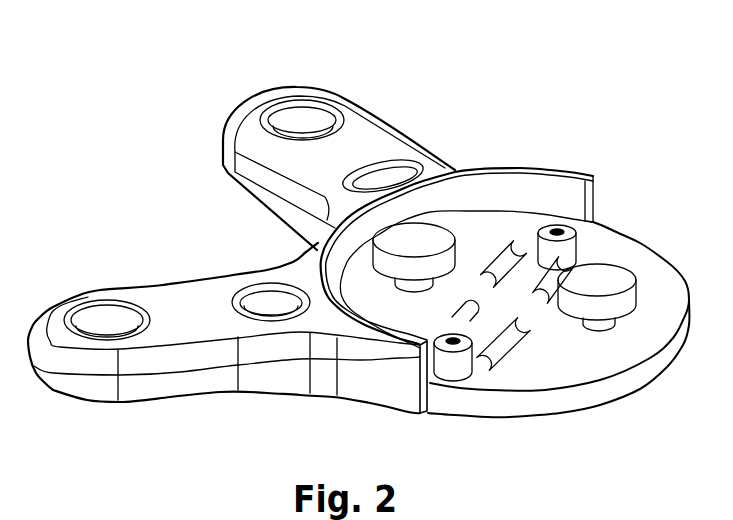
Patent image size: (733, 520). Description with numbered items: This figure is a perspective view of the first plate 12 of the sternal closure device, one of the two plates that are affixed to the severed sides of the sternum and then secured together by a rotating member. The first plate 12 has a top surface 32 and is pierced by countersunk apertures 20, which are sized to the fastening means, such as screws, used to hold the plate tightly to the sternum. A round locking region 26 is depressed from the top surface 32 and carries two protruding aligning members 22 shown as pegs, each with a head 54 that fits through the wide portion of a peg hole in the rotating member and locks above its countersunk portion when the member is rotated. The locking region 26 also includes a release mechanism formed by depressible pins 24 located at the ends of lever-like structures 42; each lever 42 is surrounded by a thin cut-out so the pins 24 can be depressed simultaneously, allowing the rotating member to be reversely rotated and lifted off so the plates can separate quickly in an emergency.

The first plate 12 is at (322, 134).
The countersunk apertures 20 is at (300, 130).
The protruding aligning members 22 is at (534, 256).
The depressible pins 24 is at (572, 232).
The locking region 26 is at (552, 365).
The top surface 32 is at (180, 300).
The lever-like structures 42 is at (477, 327).
The head 54 is at (609, 296).